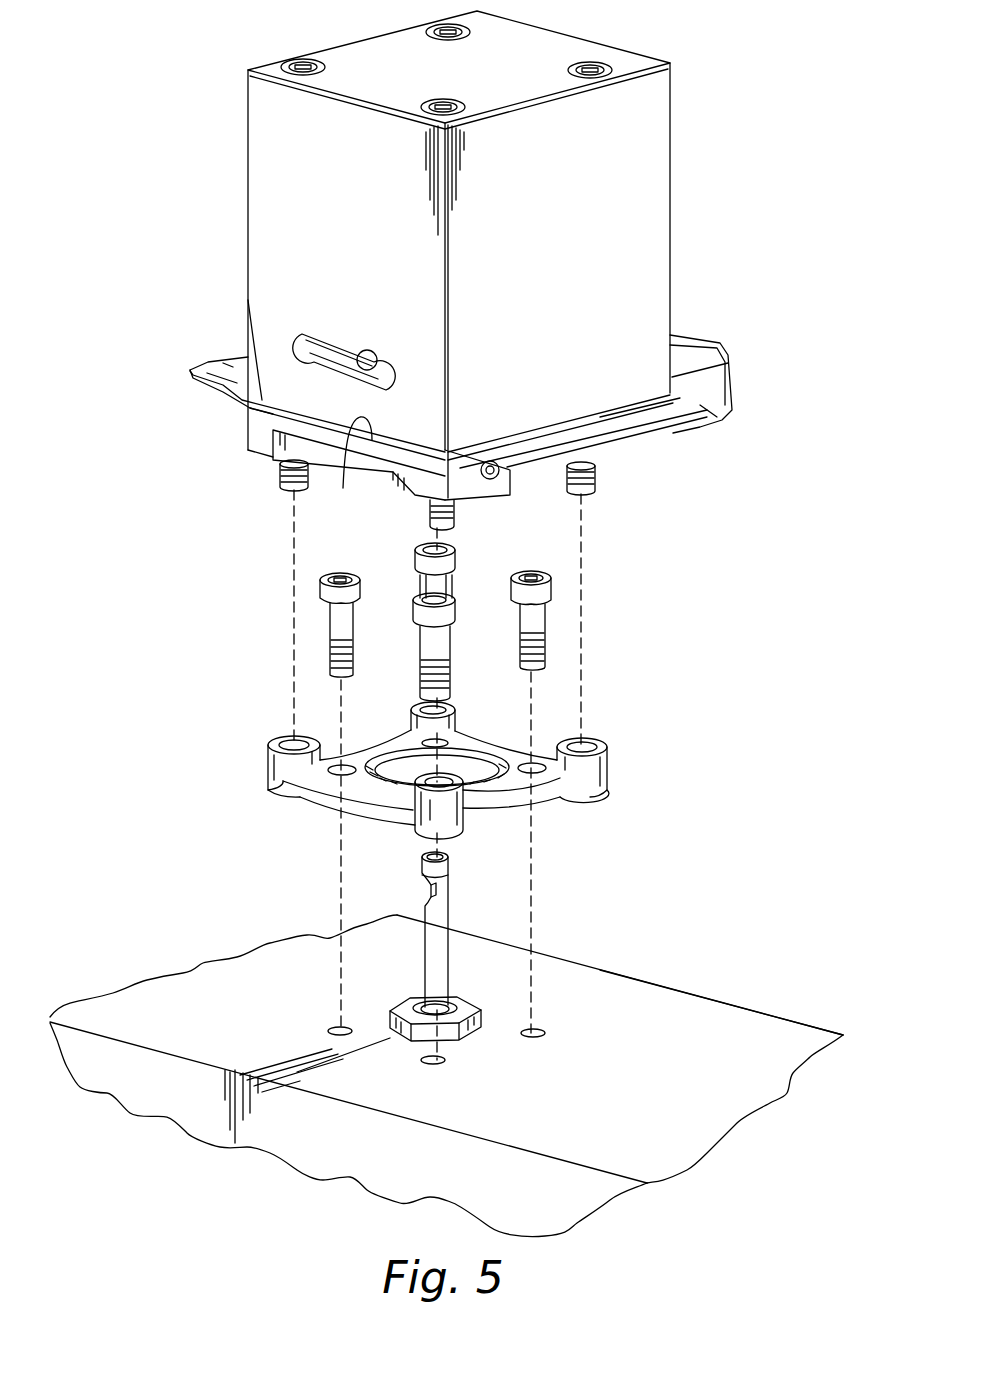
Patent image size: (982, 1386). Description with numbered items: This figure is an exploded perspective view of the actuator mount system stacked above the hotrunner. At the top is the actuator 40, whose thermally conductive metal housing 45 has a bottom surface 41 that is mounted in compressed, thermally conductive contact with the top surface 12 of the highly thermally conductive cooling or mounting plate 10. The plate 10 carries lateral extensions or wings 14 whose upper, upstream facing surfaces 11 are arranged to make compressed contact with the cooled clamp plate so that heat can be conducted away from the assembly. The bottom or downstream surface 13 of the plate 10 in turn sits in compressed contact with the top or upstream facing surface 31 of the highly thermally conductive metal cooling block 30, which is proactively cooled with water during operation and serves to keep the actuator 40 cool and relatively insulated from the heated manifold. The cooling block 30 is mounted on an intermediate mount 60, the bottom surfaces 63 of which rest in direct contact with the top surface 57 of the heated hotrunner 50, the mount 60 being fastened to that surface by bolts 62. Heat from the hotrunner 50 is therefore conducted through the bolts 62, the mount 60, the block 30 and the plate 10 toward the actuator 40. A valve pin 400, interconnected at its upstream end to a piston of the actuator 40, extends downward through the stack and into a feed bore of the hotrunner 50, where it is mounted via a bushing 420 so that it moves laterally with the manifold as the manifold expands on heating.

The thermally conductive plate 10 is at (430, 374).
The upstream facing surface 11 is at (227, 367).
The top surface 12 is at (285, 403).
The bottom surface 13 is at (273, 427).
The wings 14 is at (227, 397).
The cooling block 30 is at (361, 470).
The top surface 31 is at (347, 468).
The actuator 40 is at (672, 142).
The bottom surface 41 is at (257, 413).
The housing 45 is at (660, 227).
The hotrunner 50 is at (446, 1076).
The top surface 57 is at (745, 1030).
The mount 60 is at (479, 778).
The bolts 62 is at (383, 562).
The bottom surfaces 63 is at (550, 800).
The valve pin 400 is at (448, 912).
The bushing 420 is at (461, 985).